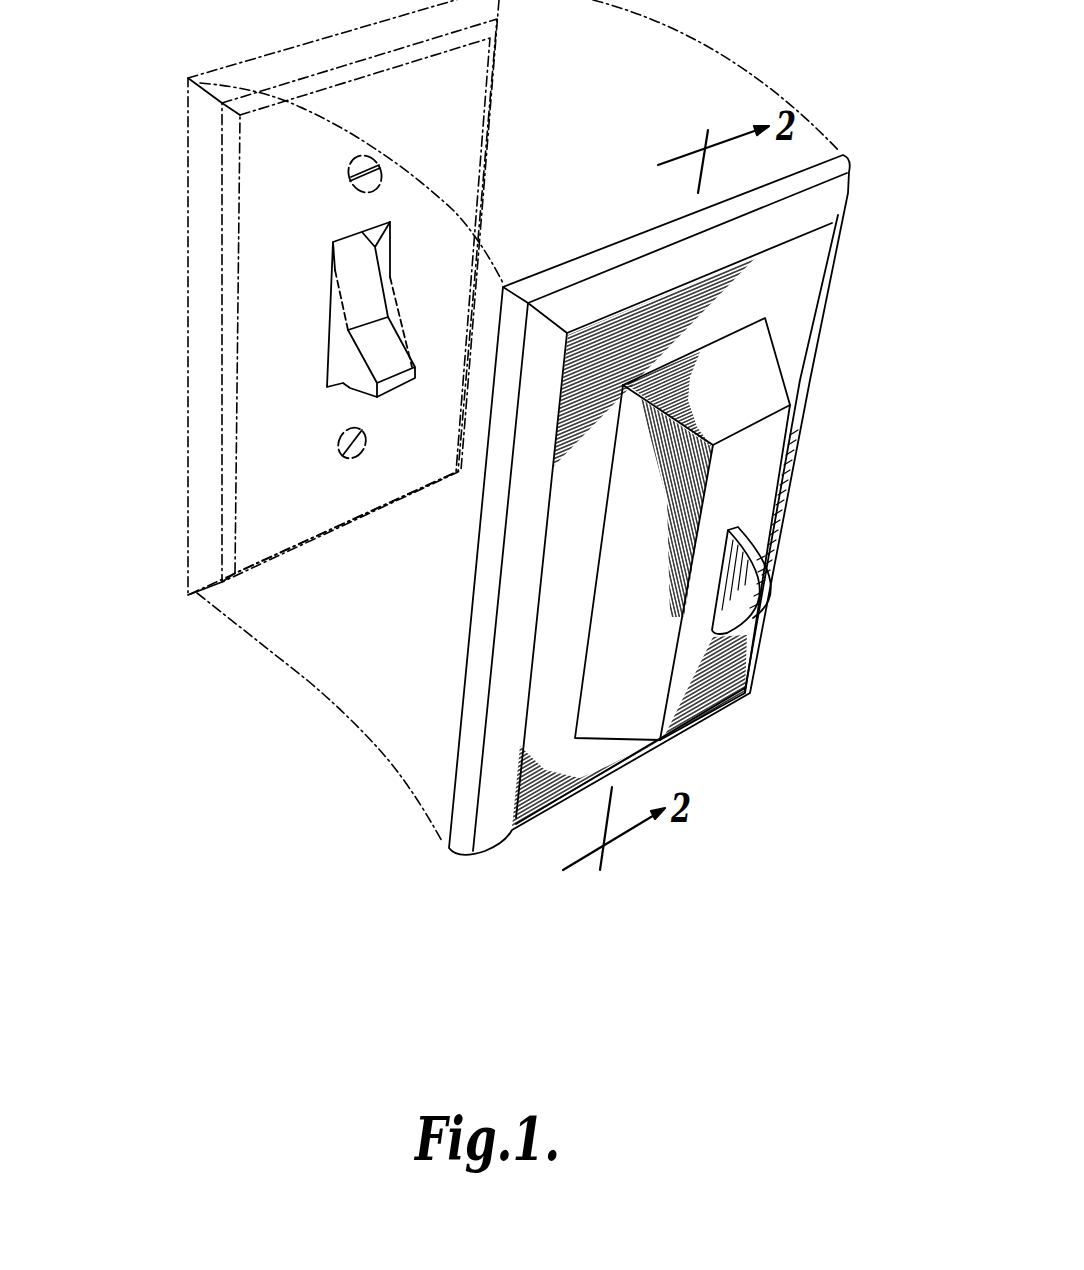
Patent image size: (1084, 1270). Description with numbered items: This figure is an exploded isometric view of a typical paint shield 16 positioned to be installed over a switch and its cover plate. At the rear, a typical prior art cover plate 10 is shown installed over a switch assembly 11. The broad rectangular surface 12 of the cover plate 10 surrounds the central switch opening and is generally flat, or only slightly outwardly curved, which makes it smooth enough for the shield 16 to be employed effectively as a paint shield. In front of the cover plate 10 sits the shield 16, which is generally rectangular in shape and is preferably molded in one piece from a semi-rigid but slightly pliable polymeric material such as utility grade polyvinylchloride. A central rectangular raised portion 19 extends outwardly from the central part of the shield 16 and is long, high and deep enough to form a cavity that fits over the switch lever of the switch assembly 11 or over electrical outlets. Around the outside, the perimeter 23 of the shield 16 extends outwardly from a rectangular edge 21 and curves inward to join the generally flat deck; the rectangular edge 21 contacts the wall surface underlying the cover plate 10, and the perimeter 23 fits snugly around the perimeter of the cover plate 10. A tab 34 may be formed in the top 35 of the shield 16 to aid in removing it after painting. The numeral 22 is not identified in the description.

The cover plate 10 is at (294, 299).
The switch assembly 11 is at (354, 398).
The broad rectangular surface 12 is at (278, 140).
The shield 16 is at (624, 510).
The central rectangular raised portion 19 is at (646, 529).
The rectangular edge 21 is at (752, 385).
The side wall 22 is at (788, 185).
The perimeter 23 is at (493, 773).
The tab 34 is at (765, 592).
The top of the shield 35 is at (766, 572).